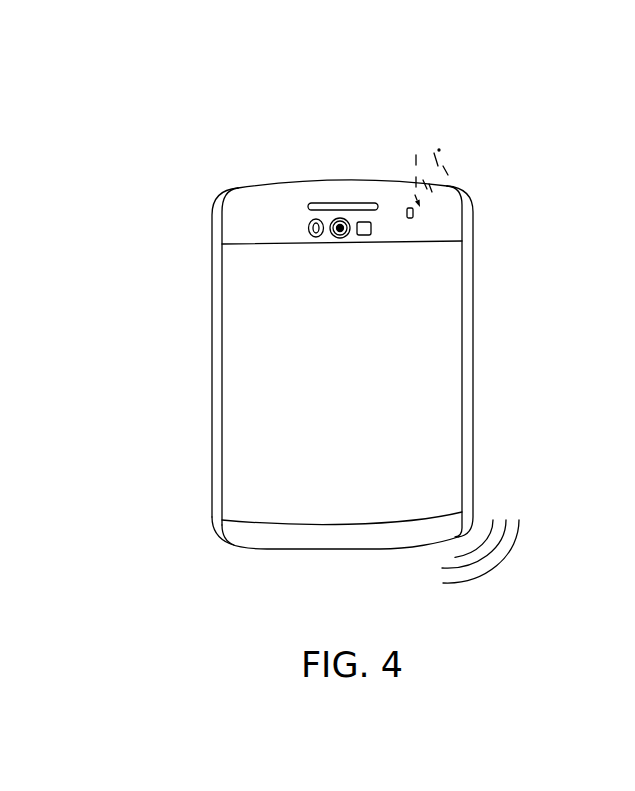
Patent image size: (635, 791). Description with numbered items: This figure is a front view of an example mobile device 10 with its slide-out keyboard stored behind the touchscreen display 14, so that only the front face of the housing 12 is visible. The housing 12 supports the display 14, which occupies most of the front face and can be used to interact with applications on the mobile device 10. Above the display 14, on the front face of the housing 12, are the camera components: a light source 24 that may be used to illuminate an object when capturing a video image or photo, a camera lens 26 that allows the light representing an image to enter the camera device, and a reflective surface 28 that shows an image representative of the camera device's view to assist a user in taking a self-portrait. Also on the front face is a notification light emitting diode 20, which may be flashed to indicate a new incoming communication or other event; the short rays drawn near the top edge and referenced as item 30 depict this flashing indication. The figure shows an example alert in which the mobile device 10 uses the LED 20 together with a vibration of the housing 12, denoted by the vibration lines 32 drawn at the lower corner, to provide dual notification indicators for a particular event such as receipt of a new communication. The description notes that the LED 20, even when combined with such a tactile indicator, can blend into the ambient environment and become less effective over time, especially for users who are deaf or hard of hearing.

The mobile device 10 is at (189, 237).
The housing 12 is at (472, 323).
The display 14 is at (348, 300).
The notification light emitting diode (LED) 20 is at (414, 216).
The light source 24 is at (303, 218).
The camera lens 26 is at (338, 220).
The reflective surface 28 is at (368, 222).
The light rays 30 is at (461, 168).
The vibration lines 32 is at (530, 540).